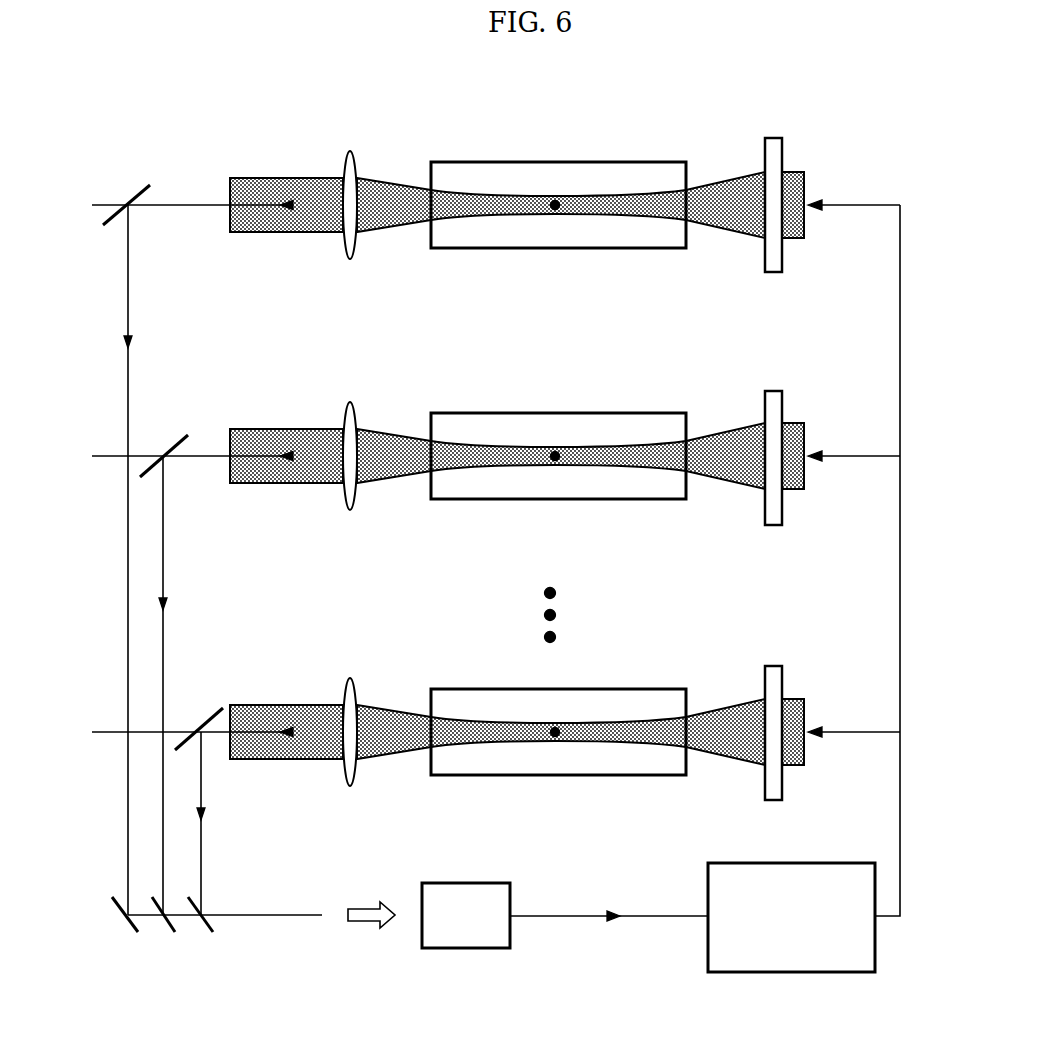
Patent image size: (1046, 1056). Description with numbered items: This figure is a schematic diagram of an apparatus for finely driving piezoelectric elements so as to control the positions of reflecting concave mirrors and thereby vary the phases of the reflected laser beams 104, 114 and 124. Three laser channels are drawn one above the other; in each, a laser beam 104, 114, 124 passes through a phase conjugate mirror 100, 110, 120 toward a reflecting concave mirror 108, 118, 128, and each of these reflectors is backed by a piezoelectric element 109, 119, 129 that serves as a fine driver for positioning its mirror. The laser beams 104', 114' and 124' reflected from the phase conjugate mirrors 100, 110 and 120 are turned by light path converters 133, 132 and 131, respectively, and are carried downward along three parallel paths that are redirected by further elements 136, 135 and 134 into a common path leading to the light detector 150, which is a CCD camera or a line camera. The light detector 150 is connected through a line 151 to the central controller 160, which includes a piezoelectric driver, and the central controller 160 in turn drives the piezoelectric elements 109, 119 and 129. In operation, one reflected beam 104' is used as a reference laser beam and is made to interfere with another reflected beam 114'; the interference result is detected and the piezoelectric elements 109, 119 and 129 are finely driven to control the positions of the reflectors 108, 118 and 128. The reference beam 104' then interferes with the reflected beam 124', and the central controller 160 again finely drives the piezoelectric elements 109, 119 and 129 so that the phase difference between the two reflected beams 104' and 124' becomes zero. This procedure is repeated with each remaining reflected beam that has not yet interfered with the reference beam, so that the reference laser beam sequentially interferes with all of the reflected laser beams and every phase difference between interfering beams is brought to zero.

The phase conjugate mirror 100 is at (458, 777).
The phase conjugate mirror 110 is at (458, 501).
The phase conjugate mirror 120 is at (458, 250).
The laser beam 104 is at (428, 738).
The laser beam 114 is at (428, 463).
The laser beam 124 is at (428, 212).
The reflected laser beam 104' is at (237, 823).
The reflected laser beam 114' is at (111, 685).
The reflected laser beam 124' is at (93, 560).
The reflecting concave mirror 108 is at (784, 800).
The reflecting concave mirror 118 is at (784, 525).
The reflecting concave mirror 128 is at (784, 272).
The piezoelectric element 109 is at (805, 768).
The piezoelectric element 119 is at (805, 491).
The piezoelectric element 129 is at (805, 240).
The light path converter 131 is at (148, 185).
The light path converter 132 is at (180, 432).
The light path converter 133 is at (216, 708).
The mirror 134 is at (134, 932).
The mirror 135 is at (172, 932).
The mirror 136 is at (209, 932).
The light detector 150 is at (445, 950).
The signal line 151 is at (598, 920).
The central controller 160 is at (733, 975).